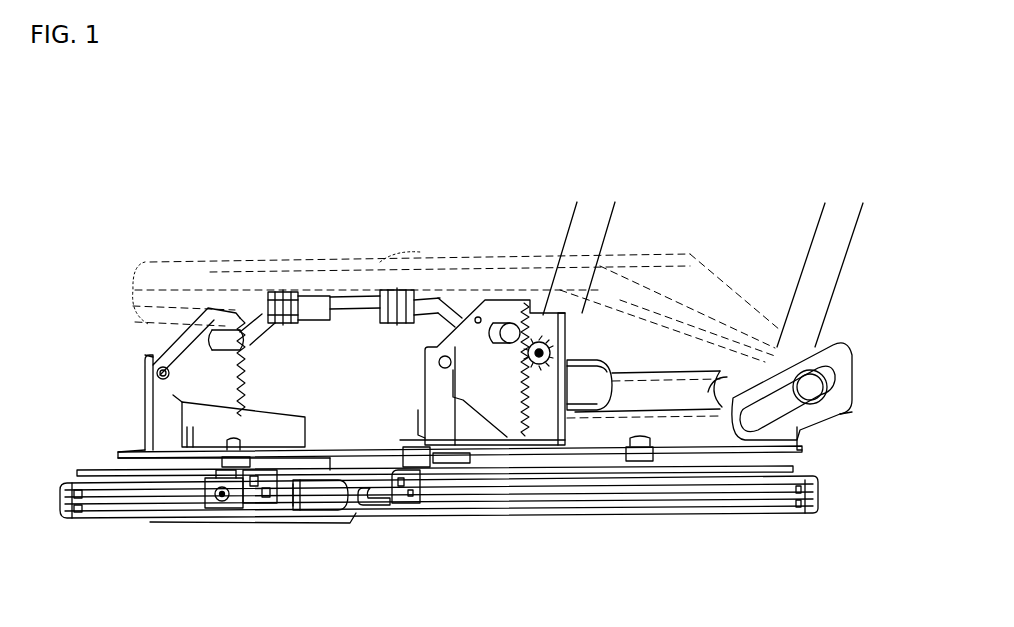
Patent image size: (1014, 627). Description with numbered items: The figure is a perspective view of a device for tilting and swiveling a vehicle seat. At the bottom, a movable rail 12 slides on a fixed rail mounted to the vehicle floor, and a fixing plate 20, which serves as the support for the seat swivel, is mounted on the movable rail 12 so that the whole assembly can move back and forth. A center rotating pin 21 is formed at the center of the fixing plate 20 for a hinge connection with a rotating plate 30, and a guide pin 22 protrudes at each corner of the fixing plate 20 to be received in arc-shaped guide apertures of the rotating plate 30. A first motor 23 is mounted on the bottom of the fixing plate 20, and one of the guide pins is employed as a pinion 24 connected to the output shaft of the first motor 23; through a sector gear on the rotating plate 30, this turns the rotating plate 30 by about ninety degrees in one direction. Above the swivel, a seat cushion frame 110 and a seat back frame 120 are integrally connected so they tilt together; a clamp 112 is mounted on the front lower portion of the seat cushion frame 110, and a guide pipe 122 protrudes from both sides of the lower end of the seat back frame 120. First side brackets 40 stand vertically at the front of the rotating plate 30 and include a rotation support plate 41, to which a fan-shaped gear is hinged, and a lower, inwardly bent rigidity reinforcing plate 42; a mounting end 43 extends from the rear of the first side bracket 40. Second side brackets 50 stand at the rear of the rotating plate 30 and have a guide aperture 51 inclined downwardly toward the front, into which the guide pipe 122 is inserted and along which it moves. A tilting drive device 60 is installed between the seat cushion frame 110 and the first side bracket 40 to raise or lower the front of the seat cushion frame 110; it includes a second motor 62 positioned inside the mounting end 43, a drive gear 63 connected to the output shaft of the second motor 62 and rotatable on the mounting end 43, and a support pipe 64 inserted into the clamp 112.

The movable rail 12 is at (462, 497).
The fixing plate 20 is at (360, 488).
The center rotating pin 21 is at (417, 455).
The guide pin 22 is at (637, 457).
The first motor 23 is at (312, 502).
The pinion 24 is at (222, 486).
The rotating plate 30 is at (585, 453).
The first side bracket 40 is at (128, 383).
The rotation support plate 41 is at (150, 425).
The rigidity reinforcing plate 42 is at (272, 423).
The mounting end 43 is at (552, 322).
The second side bracket 50 is at (840, 338).
The guide aperture 51 is at (757, 417).
The tilting drive device 60 is at (576, 344).
The second motor 62 is at (478, 318).
The drive gear 63 is at (545, 367).
The support pipe 64 is at (333, 306).
The seat cushion frame 110 is at (397, 247).
The clamp 112 is at (288, 294).
The seat back frame 120 is at (785, 290).
The guide pipe 122 is at (793, 400).